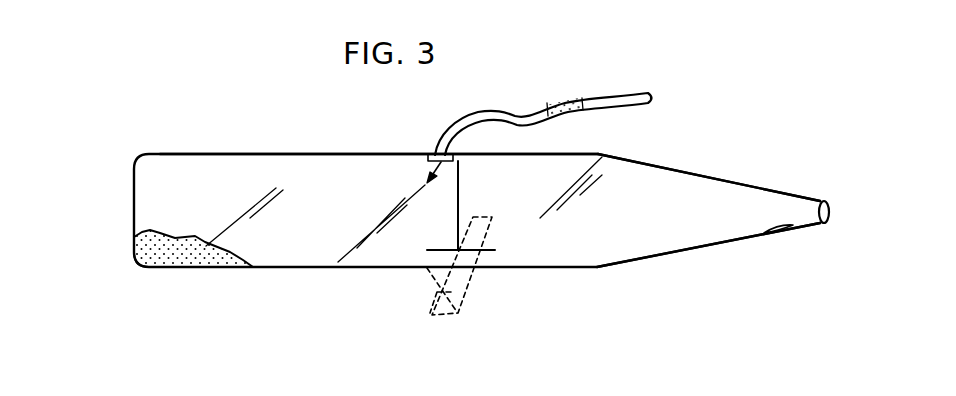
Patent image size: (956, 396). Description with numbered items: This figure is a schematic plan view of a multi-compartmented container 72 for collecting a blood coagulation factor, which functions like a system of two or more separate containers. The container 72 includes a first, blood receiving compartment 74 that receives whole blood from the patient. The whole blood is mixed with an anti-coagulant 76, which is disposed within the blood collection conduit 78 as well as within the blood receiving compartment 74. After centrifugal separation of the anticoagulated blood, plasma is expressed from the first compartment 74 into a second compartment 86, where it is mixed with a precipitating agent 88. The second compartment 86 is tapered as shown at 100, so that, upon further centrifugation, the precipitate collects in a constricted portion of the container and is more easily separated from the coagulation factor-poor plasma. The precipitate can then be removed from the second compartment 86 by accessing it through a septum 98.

The multi-compartmented container 72 is at (322, 306).
The blood receiving compartment 74 is at (320, 160).
The anti-coagulant 76 is at (180, 256).
The blood collection conduit 78 is at (477, 112).
The second compartment 86 is at (666, 258).
The precipitating agent 88 is at (770, 230).
The septum 98 is at (830, 202).
The tapered portion 100 is at (713, 174).